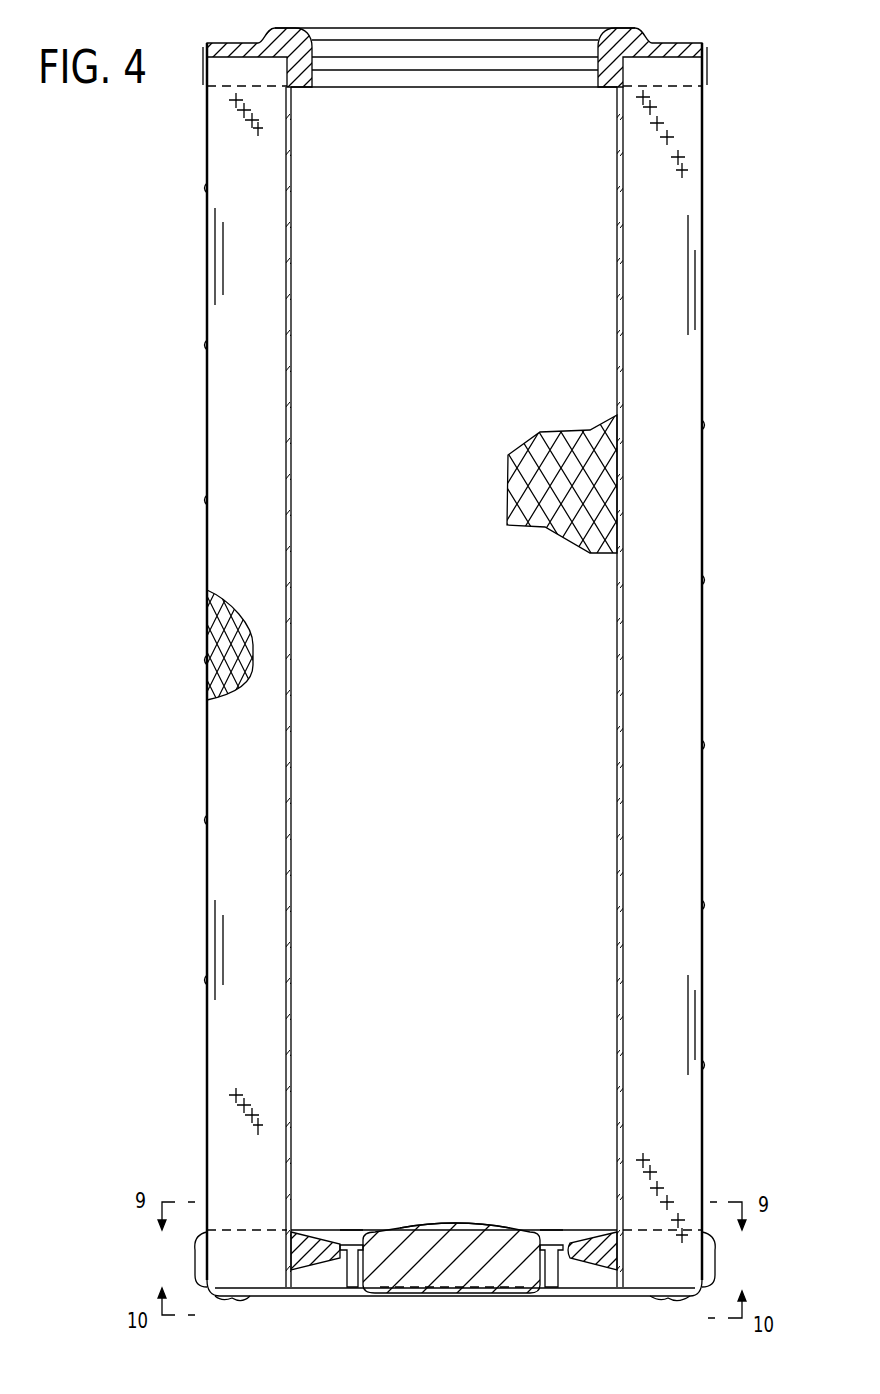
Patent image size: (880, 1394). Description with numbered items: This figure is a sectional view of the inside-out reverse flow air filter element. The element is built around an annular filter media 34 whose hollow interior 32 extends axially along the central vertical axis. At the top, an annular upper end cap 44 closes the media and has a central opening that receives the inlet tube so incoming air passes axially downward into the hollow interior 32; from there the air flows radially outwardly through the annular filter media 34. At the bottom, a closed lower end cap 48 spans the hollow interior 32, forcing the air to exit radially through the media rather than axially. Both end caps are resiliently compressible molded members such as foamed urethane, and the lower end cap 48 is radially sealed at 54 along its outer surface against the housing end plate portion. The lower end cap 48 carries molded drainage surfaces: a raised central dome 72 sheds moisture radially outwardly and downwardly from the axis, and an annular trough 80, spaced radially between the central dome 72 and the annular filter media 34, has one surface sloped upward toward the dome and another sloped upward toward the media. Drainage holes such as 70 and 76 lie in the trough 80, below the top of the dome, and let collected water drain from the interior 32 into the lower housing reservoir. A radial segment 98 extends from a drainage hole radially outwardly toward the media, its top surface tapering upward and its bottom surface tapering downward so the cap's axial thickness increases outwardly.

The hollow interior 32 is at (462, 672).
The annular filter media 34 is at (282, 232).
The annular upper end cap 44 is at (647, 36).
The closed lower end cap 48 is at (488, 1233).
The radial seal 54 is at (710, 1255).
The drainage hole 70 is at (351, 1258).
The raised central dome 72 is at (457, 1228).
The drainage hole 76 is at (550, 1258).
The annular trough 80 is at (347, 1232).
The radial segment 98 is at (302, 1250).